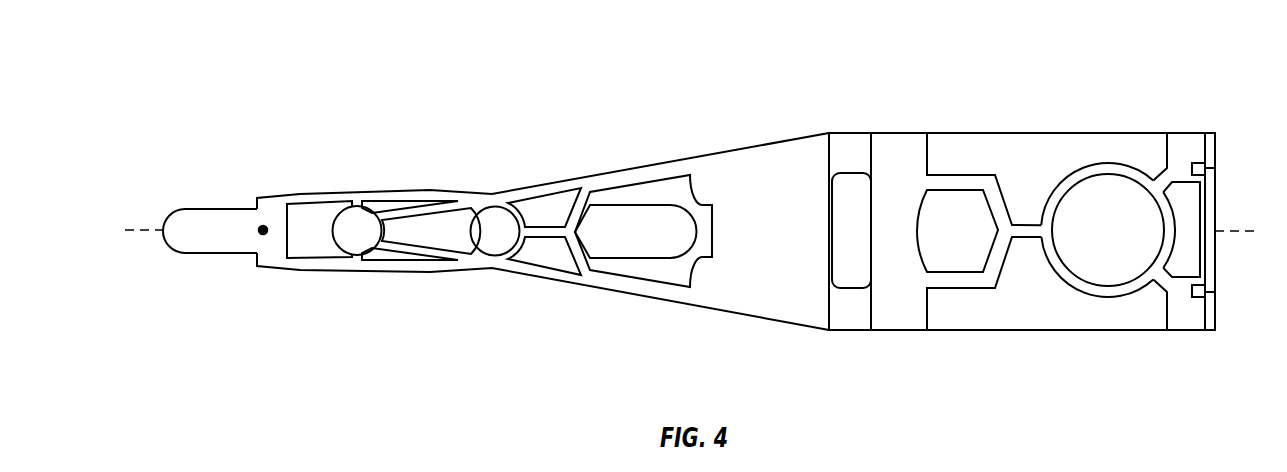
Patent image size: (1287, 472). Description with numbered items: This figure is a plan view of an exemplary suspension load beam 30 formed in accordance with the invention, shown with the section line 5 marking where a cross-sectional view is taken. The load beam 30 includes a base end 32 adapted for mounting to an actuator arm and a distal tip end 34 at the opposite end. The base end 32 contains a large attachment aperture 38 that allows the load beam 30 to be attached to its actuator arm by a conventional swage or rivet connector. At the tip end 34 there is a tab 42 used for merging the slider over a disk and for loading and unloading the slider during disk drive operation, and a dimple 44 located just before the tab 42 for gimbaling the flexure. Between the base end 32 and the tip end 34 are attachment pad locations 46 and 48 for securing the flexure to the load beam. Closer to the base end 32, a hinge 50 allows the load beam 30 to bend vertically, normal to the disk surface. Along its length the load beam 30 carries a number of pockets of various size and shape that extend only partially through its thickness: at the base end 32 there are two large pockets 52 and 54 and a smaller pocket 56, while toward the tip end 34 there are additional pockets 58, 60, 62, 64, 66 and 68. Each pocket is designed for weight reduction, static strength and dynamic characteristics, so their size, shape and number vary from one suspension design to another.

The suspension load beam 30 is at (812, 92).
The base end 32 is at (1037, 140).
The distal tip end 34 is at (287, 194).
The attachment aperture 38 is at (1110, 287).
The tab 42 is at (208, 242).
The dimple 44 is at (259, 226).
The attachment pad location 46 is at (357, 243).
The attachment pad location 48 is at (500, 236).
The hinge 50 is at (845, 158).
The large pocket 52 is at (972, 150).
The large pocket 54 is at (1020, 302).
The smaller pocket 56 is at (1185, 243).
The pocket 58 is at (703, 222).
The pocket 60 is at (555, 210).
The pocket 62 is at (553, 253).
The pocket 64 is at (452, 220).
The pocket 66 is at (390, 204).
The pocket 68 is at (403, 257).
The section line 5- 5 is at (125, 230).